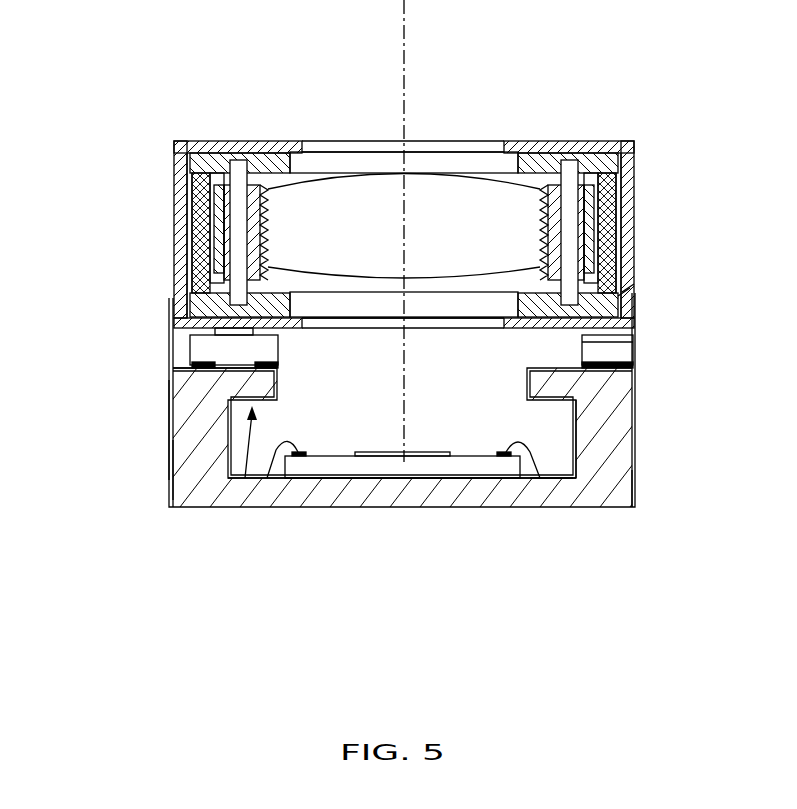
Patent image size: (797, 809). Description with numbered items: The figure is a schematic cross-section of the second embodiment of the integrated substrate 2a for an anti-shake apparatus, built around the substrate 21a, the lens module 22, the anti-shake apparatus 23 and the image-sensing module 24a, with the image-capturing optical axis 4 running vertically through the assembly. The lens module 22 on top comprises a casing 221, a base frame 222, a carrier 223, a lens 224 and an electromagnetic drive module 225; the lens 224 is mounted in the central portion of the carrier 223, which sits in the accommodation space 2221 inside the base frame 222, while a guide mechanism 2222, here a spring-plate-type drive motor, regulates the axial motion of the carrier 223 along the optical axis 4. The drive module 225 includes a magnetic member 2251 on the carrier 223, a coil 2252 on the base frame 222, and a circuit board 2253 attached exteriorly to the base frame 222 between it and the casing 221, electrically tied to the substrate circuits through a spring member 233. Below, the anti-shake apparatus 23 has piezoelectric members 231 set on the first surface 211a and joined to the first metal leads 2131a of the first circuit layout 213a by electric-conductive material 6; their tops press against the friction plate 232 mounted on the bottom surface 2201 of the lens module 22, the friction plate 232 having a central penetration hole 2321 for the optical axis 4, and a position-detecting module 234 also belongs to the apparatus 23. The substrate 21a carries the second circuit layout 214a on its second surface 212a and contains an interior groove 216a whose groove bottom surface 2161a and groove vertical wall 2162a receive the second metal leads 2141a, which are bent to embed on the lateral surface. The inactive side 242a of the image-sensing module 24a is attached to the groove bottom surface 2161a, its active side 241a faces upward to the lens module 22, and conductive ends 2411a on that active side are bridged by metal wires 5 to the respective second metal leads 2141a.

The integrated substrate 2a is at (680, 120).
The image-capturing optical axis 4 is at (412, 81).
The lens module 22 is at (55, 10).
The casing 221 is at (207, 142).
The base frame 222 is at (193, 151).
The carrier 223 is at (176, 163).
The lens 224 is at (350, 190).
The electromagnetic drive module 225 is at (108, 134).
The magnetic member 2251 is at (193, 185).
The coil 2252 is at (190, 232).
The circuit board 2253 is at (196, 272).
The accommodation space 2221 is at (525, 188).
The guide mechanism 2222 is at (237, 160).
The bottom surface 2201 is at (187, 305).
The penetration hole 2321 is at (345, 325).
The anti-shake apparatus 23 is at (742, 196).
The piezoelectric member 231 is at (616, 296).
The friction plate 232 is at (623, 292).
The spring member 233 is at (174, 327).
The position-detecting module 234 is at (630, 347).
The electric-conductive material 6 is at (190, 362).
The substrate 21a is at (615, 415).
The first surface 211a is at (178, 380).
The first circuit layout 213a is at (164, 452).
The first metal lead 2131a is at (170, 477).
The second circuit layout 214a is at (226, 504).
The second metal lead 2141a is at (240, 482).
The second surface 212a is at (258, 505).
The interior groove 216a is at (577, 457).
The groove bottom surface 2161a is at (542, 476).
The groove vertical wall 2162a is at (636, 503).
The image-sensing module 24a is at (375, 479).
The active side 241a is at (498, 458).
The conductive end 2411a is at (525, 478).
The inactive side 242a is at (442, 480).
The metal wire 5 is at (276, 462).